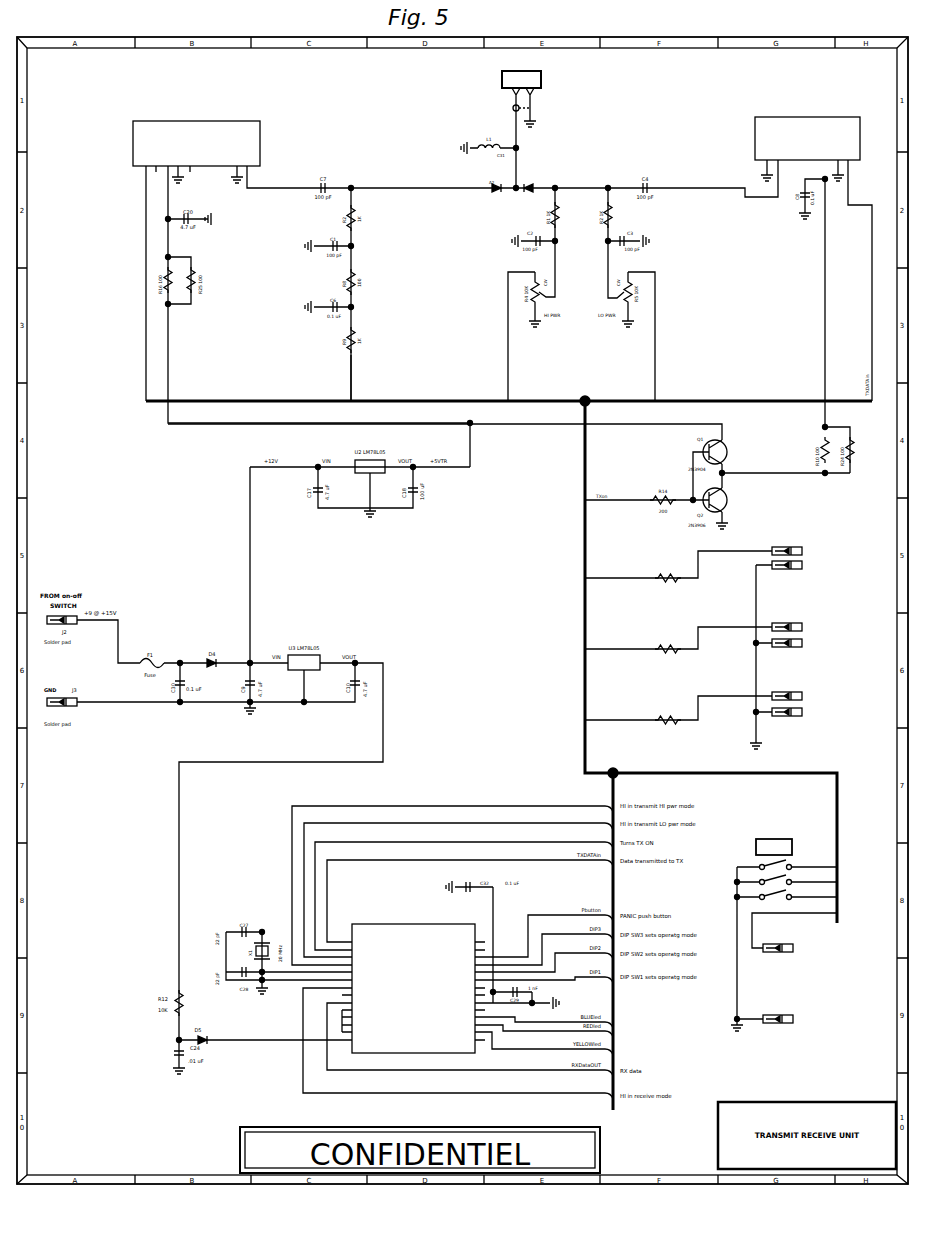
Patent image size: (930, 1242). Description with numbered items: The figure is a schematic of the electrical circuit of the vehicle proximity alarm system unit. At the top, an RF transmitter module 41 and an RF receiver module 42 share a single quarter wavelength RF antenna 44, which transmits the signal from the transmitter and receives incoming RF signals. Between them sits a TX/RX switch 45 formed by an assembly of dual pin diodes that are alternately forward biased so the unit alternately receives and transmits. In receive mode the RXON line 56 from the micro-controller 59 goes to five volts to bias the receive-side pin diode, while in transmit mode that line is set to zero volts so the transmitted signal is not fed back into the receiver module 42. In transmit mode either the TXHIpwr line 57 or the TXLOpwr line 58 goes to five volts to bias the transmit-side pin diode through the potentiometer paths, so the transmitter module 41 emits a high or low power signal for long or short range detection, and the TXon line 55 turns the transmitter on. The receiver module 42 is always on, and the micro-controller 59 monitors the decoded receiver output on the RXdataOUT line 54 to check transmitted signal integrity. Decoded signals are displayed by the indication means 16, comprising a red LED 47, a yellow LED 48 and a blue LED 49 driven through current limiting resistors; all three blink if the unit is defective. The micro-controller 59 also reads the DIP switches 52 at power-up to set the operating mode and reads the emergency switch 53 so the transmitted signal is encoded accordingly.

The RF transmitter module 41 is at (778, 117).
The RF receiver module 42 is at (192, 121).
The RF antenna 44 is at (545, 88).
The TX/RX switch 45 is at (542, 171).
The red LED 47 is at (819, 563).
The yellow LED 48 is at (818, 640).
The blue LED 49 is at (815, 697).
The indication means 16 is at (847, 720).
The DIP switches 52 is at (771, 839).
The emergency switch 53 is at (826, 969).
The RXdataOUT line 54 is at (145, 346).
The TXon line 55 is at (556, 841).
The RXON line 56 is at (357, 389).
The TXHIpwr line 57 is at (512, 361).
The TXLOpwr line 58 is at (659, 368).
The micro-controller 59 is at (376, 922).